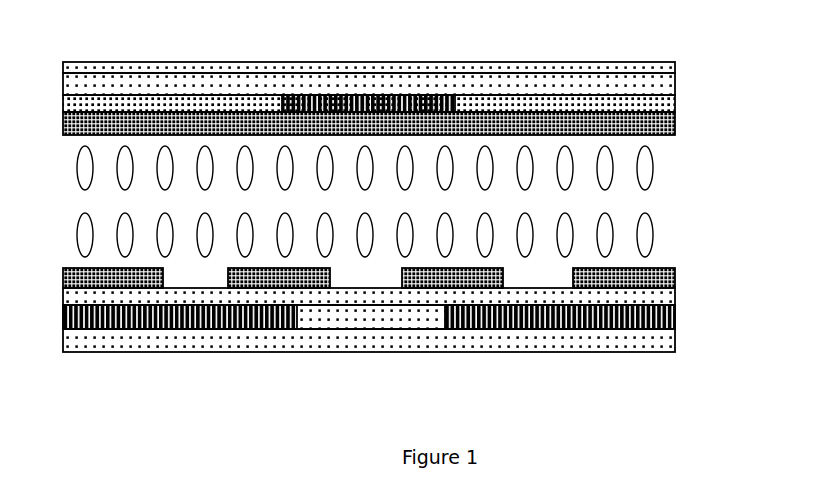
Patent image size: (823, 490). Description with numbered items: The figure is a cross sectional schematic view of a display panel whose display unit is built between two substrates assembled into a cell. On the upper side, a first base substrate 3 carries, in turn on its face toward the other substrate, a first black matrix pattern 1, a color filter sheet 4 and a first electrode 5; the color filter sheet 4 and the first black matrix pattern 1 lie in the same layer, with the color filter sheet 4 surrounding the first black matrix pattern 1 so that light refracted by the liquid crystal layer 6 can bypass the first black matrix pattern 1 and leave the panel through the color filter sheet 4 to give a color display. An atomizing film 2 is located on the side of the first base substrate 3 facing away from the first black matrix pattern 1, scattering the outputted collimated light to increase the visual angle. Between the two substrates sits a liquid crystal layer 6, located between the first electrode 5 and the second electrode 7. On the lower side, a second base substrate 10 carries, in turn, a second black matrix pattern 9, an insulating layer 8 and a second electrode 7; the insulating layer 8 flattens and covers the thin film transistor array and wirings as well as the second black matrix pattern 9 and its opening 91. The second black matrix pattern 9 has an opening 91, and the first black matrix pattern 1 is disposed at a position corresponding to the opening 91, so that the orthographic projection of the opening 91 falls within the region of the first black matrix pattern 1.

The first black matrix pattern 1 is at (420, 97).
The atomizing film 2 is at (675, 65).
The first base substrate 3 is at (675, 76).
The color filter sheet 4 is at (675, 100).
The first electrode 5 is at (675, 117).
The liquid crystal layer 6 is at (650, 187).
The second electrode 7 is at (675, 273).
The insulating layer 8 is at (675, 295).
The second black matrix pattern 9 is at (675, 315).
The opening 91 is at (367, 313).
The second base substrate 10 is at (675, 340).